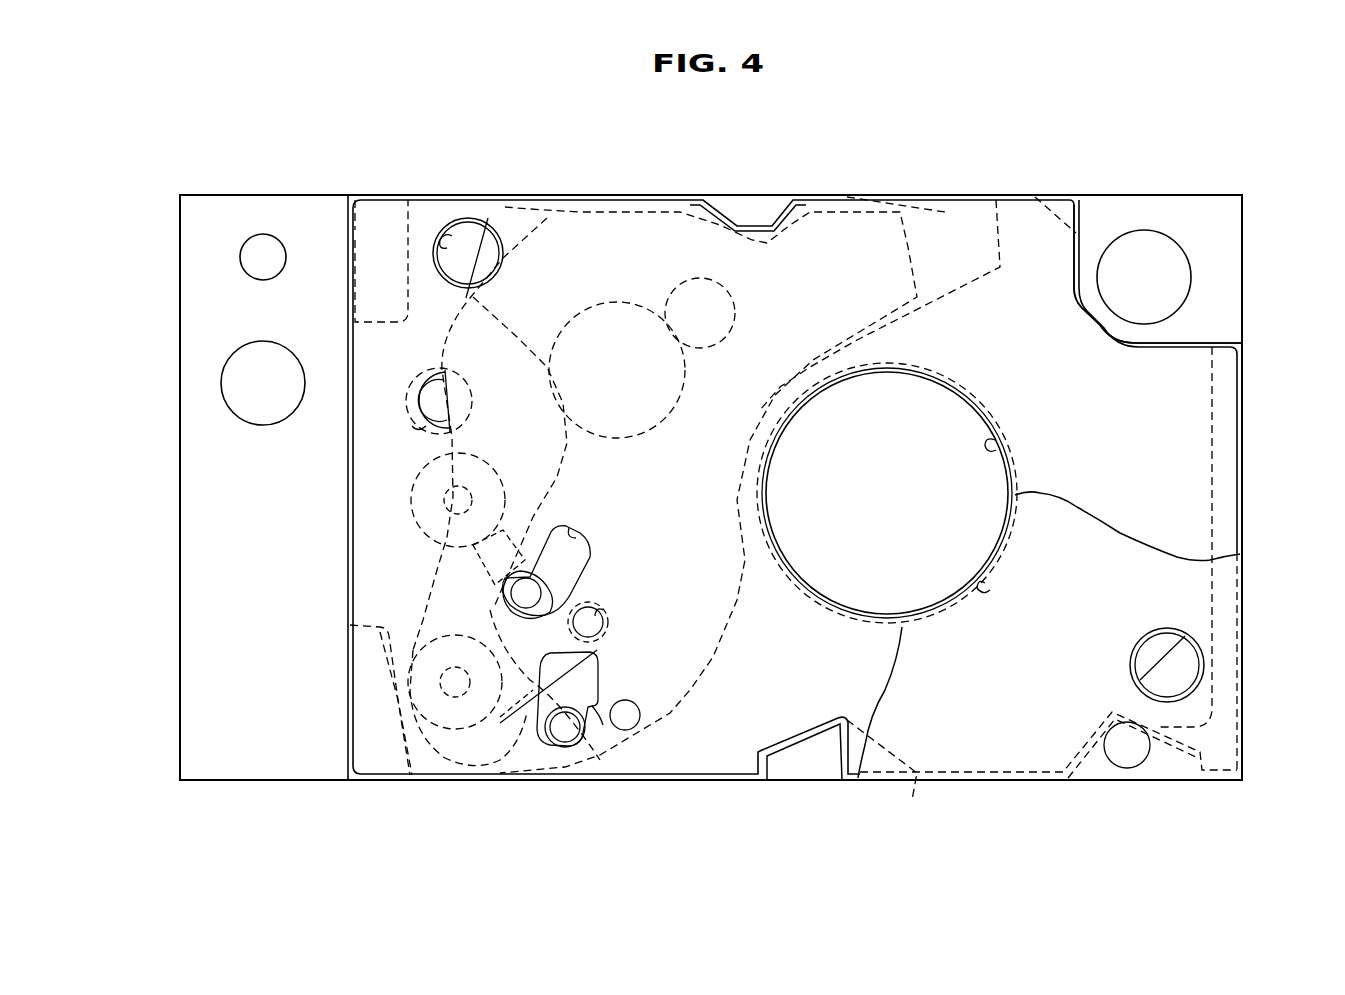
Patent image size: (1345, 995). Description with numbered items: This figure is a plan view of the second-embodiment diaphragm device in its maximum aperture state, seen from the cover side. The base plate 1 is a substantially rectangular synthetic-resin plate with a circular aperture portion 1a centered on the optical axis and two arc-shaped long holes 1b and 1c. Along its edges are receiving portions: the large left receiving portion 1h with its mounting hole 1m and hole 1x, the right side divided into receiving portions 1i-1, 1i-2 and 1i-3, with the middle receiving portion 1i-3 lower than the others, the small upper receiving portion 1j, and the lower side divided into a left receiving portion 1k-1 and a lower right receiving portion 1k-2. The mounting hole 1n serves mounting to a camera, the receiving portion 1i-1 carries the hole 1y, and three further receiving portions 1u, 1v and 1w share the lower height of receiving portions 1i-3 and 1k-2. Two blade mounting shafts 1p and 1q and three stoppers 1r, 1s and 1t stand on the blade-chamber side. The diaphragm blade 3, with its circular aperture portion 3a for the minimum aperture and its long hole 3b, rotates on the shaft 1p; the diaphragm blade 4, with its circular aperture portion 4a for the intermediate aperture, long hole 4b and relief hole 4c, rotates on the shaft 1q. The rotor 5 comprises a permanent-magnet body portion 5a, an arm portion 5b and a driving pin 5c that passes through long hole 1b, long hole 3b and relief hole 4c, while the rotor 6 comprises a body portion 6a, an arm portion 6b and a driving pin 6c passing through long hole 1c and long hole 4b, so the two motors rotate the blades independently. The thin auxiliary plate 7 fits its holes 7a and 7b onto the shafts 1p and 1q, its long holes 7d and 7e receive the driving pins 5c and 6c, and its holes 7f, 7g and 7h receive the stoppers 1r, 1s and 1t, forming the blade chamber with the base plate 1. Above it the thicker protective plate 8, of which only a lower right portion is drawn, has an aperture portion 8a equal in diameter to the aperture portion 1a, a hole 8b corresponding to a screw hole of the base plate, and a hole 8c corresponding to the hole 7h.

The base plate 1 is at (213, 185).
The circular aperture portion 1a is at (988, 405).
The arc-shaped long hole 1b is at (536, 590).
The arc-shaped long hole 1c is at (603, 725).
The receiving portion 1h is at (240, 748).
The receiving portion 1i-1 is at (1230, 300).
The receiving portion 1i-2 is at (1180, 768).
The receiving portion 1i-3 is at (1222, 417).
The receiving portion 1j is at (763, 203).
The left receiving portion 1k-1 is at (810, 772).
The right receiving portion 1k-2 is at (894, 784).
The mounting hole 1m is at (252, 352).
The mounting hole 1n is at (1138, 236).
The blade mounting shaft 1p is at (606, 622).
The blade mounting shaft 1q is at (633, 700).
The stopper 1r is at (465, 232).
The stopper 1s is at (421, 392).
The stopper 1t is at (1185, 672).
The receiving portion 1u is at (376, 222).
The receiving portion 1v is at (378, 758).
The receiving portion 1w is at (1058, 203).
The hole 1x is at (270, 236).
The hole 1y is at (1135, 762).
The diaphragm blade 3 is at (784, 386).
The circular aperture portion 3a is at (690, 290).
The long hole 3b is at (588, 607).
The diaphragm blade 4 is at (633, 489).
The circular aperture portion 4a is at (596, 302).
The long hole 4b is at (545, 745).
The relief hole 4c is at (478, 622).
The rotor 5 is at (415, 516).
The body portion 5a is at (432, 477).
The arm portion 5b is at (468, 552).
The driving pin 5c is at (532, 595).
The rotor 6 is at (450, 741).
The body portion 6a is at (411, 650).
The arm portion 6b is at (468, 762).
The driving pin 6c is at (565, 730).
The auxiliary plate 7 is at (777, 707).
The hole 7a is at (1005, 450).
The hole 7b is at (627, 728).
The long hole 7d is at (566, 549).
The long hole 7e is at (598, 751).
The hole 7f is at (443, 240).
The hole 7g is at (418, 428).
The hole 7h is at (1170, 630).
The protective plate 8 is at (1005, 757).
The aperture portion 8a is at (985, 582).
The hole 8b is at (1115, 785).
The hole 8c is at (1237, 647).